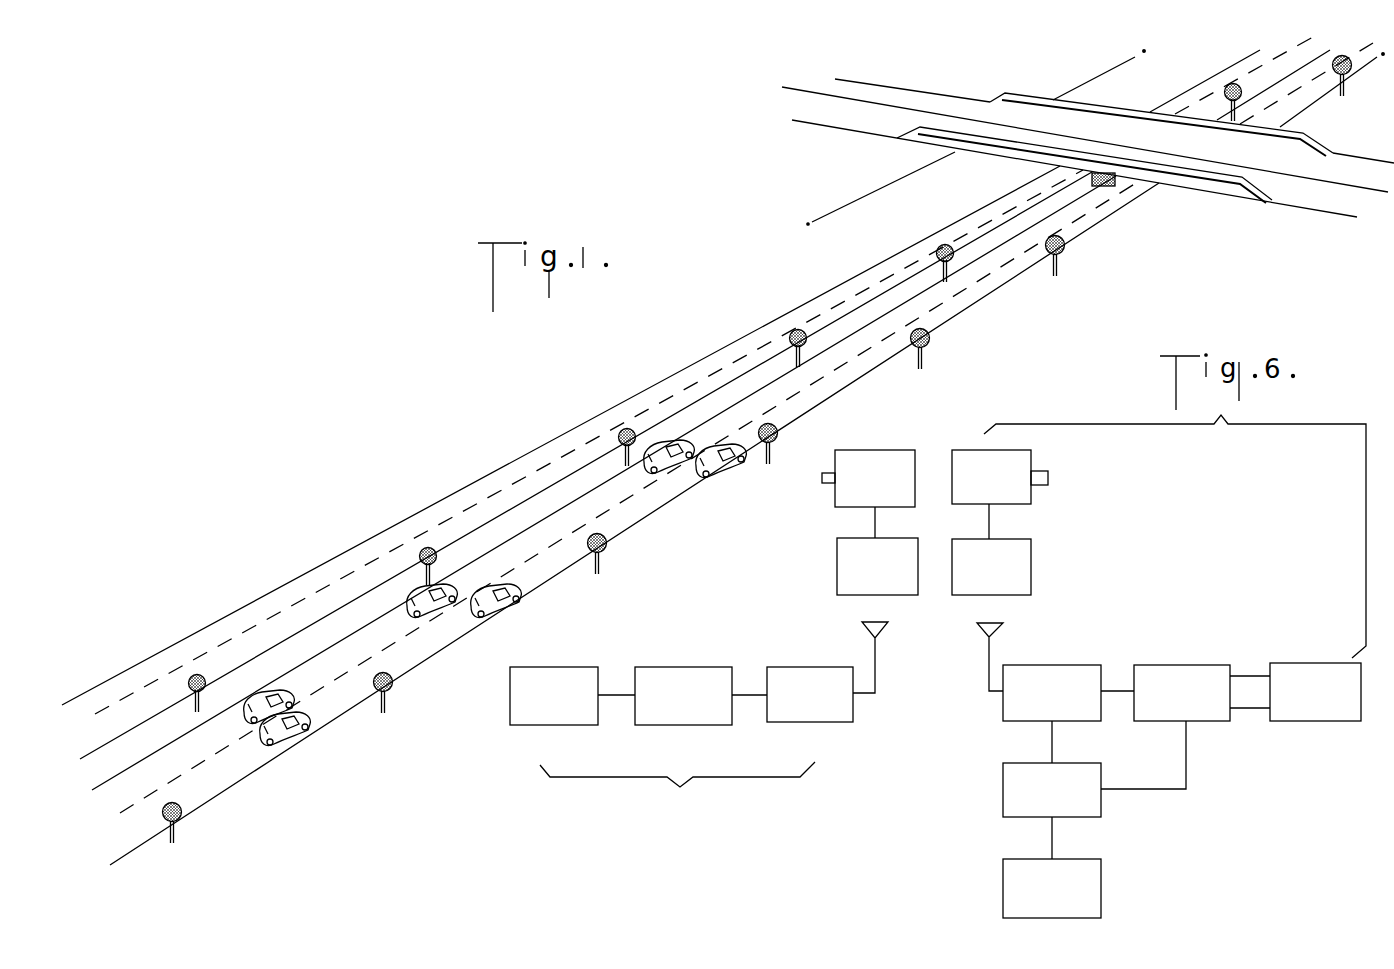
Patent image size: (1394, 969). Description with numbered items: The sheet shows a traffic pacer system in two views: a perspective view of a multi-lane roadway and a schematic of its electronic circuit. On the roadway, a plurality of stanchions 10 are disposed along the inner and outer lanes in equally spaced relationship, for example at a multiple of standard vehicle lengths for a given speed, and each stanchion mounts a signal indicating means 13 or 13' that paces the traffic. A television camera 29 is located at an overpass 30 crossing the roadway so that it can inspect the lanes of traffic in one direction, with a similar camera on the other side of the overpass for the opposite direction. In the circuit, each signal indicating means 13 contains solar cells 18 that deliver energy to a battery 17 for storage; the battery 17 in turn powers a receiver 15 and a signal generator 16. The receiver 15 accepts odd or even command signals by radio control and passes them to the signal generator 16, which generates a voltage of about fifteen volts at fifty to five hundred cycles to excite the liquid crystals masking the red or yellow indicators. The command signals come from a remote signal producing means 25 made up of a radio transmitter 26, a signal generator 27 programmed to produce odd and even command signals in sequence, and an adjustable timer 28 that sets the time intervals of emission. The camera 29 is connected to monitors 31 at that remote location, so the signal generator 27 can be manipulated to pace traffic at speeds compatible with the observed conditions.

In FIG. 1, the stanchion 10 is at (200, 702).
In FIG. 1, the signal indicating means 13 is at (715, 365).
In FIG. 6, the signal indicating means 13 is at (1315, 670).
In FIG. 1, the signal indicating means 13' is at (766, 439).
In FIG. 6, the receiver 15 is at (1005, 717).
In FIG. 6, the signal generator 16 is at (1214, 665).
In FIG. 6, the battery 17 is at (1005, 813).
In FIG. 6, the solar cell 18 is at (1005, 862).
In FIG. 6, the signal producing means 25 is at (699, 718).
In FIG. 6, the radio transmitter 26 is at (807, 667).
In FIG. 6, the signal generator 27 is at (705, 667).
In FIG. 6, the adjustable timer 28 is at (582, 667).
In FIG. 1, the television camera 29 is at (1095, 173).
In FIG. 6, the television camera 29 is at (957, 452).
In FIG. 1, the overpass 30 is at (996, 150).
In FIG. 6, the monitor 31 is at (918, 592).